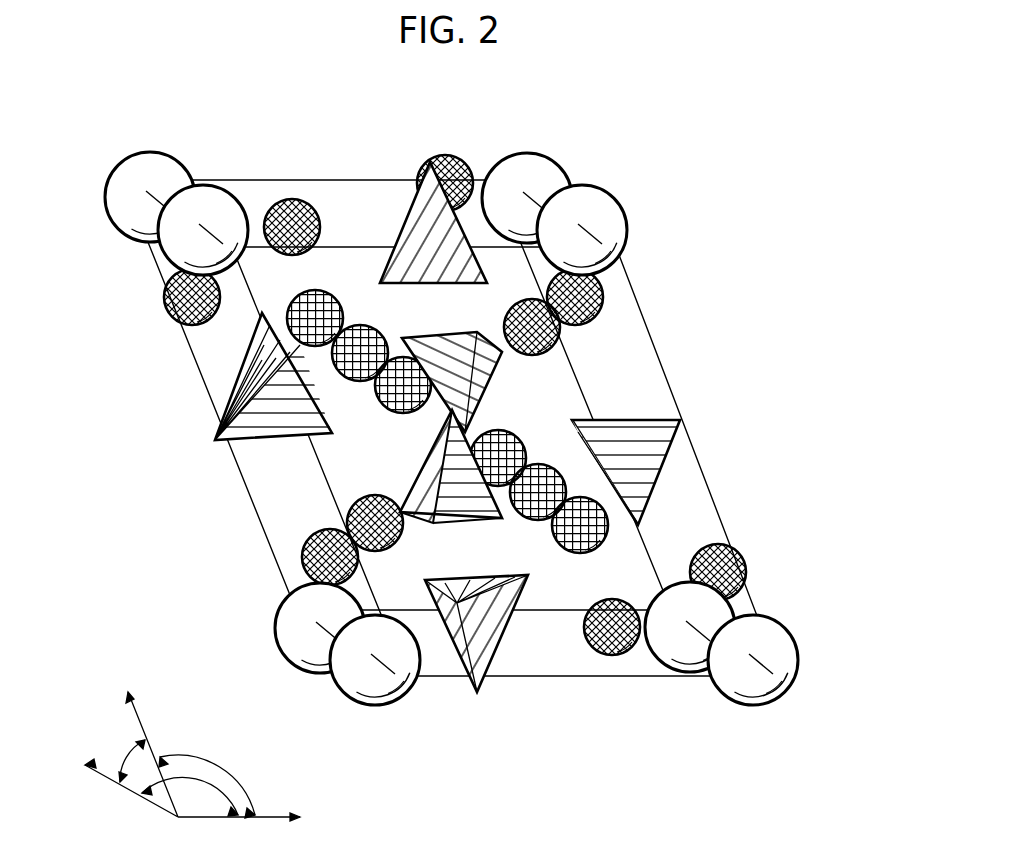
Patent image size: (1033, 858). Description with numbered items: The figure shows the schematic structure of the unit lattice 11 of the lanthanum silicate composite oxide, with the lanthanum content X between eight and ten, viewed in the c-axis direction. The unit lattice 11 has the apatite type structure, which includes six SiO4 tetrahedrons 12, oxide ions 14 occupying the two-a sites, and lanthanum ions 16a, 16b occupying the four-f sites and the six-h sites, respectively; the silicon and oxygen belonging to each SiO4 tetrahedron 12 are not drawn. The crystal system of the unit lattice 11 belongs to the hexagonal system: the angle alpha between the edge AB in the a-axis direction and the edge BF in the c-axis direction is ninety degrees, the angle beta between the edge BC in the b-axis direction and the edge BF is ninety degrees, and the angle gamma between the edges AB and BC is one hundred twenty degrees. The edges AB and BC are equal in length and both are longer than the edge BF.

The unit lattice 11 is at (632, 82).
The SiO4 tetrahedron 12 is at (412, 186).
The O2- 14 is at (130, 188).
The La3+ 16a is at (362, 338).
The La3+ 16b is at (165, 294).